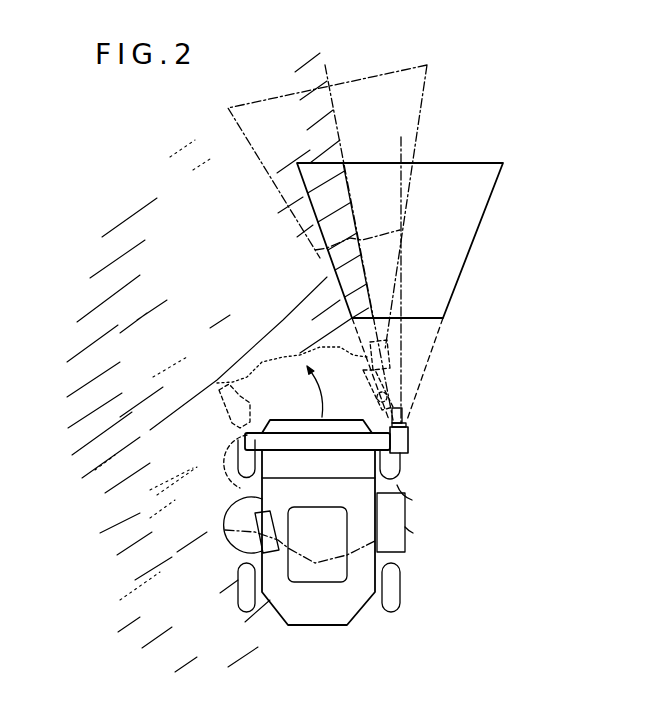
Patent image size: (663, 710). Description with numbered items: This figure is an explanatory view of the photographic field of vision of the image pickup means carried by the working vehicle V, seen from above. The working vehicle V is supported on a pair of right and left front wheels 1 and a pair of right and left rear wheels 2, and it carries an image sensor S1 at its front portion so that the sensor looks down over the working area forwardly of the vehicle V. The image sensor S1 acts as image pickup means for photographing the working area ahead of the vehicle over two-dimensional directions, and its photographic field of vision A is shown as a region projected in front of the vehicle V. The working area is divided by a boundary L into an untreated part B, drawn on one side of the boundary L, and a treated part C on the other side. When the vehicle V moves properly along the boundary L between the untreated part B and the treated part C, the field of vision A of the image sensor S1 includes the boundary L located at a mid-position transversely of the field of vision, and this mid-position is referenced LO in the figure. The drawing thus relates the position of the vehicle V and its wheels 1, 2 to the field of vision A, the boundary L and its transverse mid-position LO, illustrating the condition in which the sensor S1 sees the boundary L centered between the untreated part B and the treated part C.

The front wheels 1 is at (233, 462).
The rear wheels 2 is at (227, 530).
The working vehicle V is at (215, 556).
The image sensor S1 is at (367, 372).
The field of vision A is at (413, 133).
The untreated part B is at (203, 406).
The treated part C is at (533, 275).
The boundary L is at (350, 193).
The mid-position of the field of vision LO is at (325, 65).